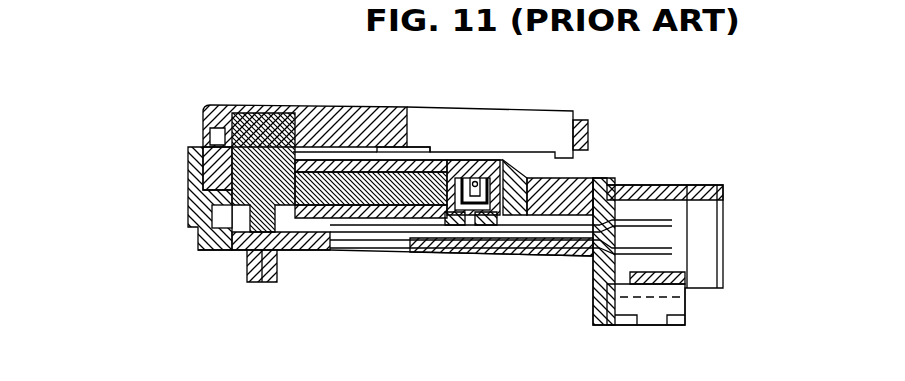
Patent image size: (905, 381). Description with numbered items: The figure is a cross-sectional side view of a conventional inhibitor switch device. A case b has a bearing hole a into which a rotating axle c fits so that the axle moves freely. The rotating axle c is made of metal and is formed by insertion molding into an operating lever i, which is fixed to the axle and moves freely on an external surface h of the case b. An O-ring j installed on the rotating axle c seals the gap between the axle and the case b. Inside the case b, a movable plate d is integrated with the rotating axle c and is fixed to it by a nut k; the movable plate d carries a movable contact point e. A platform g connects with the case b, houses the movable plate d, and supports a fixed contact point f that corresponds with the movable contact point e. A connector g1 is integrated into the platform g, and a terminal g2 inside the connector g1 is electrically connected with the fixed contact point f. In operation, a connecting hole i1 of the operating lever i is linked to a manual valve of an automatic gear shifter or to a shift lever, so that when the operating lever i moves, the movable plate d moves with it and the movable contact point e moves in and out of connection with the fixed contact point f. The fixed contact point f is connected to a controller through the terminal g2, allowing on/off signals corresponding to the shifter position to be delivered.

The O-ring j is at (222, 147).
The rotating axle c is at (244, 112).
The bearing hole a is at (279, 118).
The operating lever i is at (380, 109).
The connecting hole i1 is at (538, 128).
The movable plate d is at (446, 172).
The movable contact point e is at (470, 175).
The external surface h is at (490, 176).
The case b is at (592, 178).
The platform g is at (537, 257).
The connector g1 is at (703, 185).
The terminal g2 is at (672, 251).
The nut k is at (241, 249).
The fixed contact point f is at (483, 215).